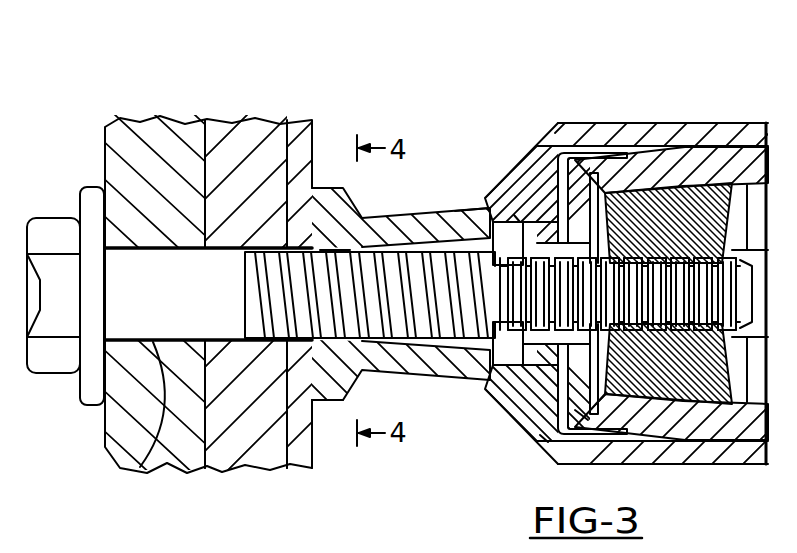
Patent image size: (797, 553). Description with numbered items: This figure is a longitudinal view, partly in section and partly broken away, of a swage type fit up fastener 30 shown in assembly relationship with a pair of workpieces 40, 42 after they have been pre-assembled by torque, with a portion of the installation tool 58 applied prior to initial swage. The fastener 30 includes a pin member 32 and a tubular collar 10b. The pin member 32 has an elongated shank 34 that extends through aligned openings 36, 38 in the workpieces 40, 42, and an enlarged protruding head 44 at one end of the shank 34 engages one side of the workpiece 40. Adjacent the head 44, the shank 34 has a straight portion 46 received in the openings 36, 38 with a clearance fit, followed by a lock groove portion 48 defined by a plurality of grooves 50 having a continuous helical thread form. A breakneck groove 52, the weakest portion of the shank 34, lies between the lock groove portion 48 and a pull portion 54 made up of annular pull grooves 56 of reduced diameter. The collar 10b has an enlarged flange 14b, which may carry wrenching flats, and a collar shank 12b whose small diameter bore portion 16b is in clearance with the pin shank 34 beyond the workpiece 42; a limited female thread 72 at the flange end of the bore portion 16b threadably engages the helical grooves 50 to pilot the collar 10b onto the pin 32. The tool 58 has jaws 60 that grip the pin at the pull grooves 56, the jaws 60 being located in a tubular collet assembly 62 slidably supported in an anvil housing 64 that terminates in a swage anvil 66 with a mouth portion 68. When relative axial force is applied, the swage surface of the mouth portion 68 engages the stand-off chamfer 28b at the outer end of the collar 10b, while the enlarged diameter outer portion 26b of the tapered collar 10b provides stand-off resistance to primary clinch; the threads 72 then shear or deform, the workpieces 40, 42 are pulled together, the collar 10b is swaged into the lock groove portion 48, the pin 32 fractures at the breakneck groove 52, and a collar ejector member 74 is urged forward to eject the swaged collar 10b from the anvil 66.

The tubular collar 10b is at (383, 218).
The collar shank 12b is at (413, 366).
The enlarged flange 14b is at (327, 193).
The small diameter bore portion 16b is at (337, 248).
The enlarged diameter outer portion 26b is at (468, 207).
The stand-off chamfer 28b is at (490, 377).
The fastener 30 is at (435, 165).
The pin member 32 is at (175, 243).
The elongated shank 34 is at (220, 270).
The opening 36 is at (147, 470).
The opening 38 is at (240, 463).
The workpiece 40 is at (176, 242).
The workpiece 42 is at (270, 143).
The enlarged protruding head 44 is at (57, 237).
The straight portion 46 is at (152, 303).
The lock groove portion 48 is at (288, 247).
The grooves 50 is at (303, 345).
The breakneck groove 52 is at (522, 365).
The pull portion 54 is at (527, 230).
The pull grooves 56 is at (552, 378).
The tool 58 is at (562, 122).
The jaws 60 is at (705, 345).
The tubular collet assembly 62 is at (617, 177).
The anvil housing 64 is at (683, 450).
The swage anvil 66 is at (540, 435).
The mouth portion 68 is at (514, 220).
The female thread 72 is at (337, 342).
The collar ejector member 74 is at (582, 413).